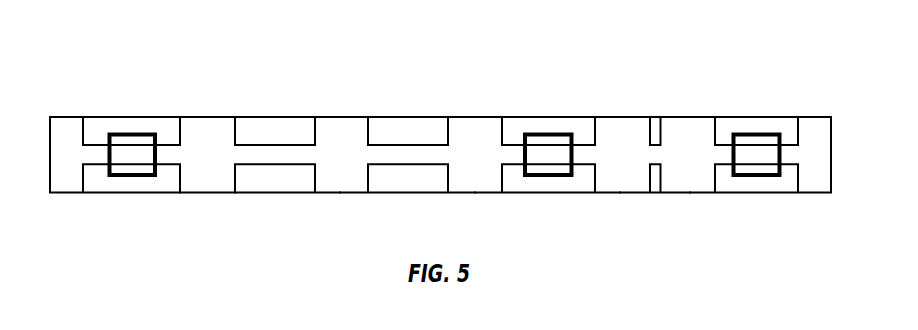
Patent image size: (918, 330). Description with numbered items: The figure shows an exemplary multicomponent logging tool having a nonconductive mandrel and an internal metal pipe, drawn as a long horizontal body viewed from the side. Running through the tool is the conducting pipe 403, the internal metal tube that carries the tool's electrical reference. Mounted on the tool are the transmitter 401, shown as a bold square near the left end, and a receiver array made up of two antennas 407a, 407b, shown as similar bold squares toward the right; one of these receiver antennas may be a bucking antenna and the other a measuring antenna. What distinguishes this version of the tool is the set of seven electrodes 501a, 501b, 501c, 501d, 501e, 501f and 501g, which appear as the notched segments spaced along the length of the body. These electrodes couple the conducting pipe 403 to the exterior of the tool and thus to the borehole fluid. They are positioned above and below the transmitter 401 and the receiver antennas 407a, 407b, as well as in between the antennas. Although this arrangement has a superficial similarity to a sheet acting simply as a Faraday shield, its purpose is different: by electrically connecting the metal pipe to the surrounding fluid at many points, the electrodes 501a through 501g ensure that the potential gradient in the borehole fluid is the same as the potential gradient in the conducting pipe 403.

The transmitter 401 is at (135, 133).
The conducting pipe 403 is at (292, 152).
The receiver antenna 407a is at (538, 133).
The receiver antenna 407b is at (747, 133).
The electrode 501a is at (58, 183).
The electrode 501b is at (222, 183).
The electrode 501c is at (325, 183).
The electrode 501d is at (457, 183).
The electrode 501e is at (607, 183).
The electrode 501f is at (683, 183).
The electrode 501g is at (807, 183).